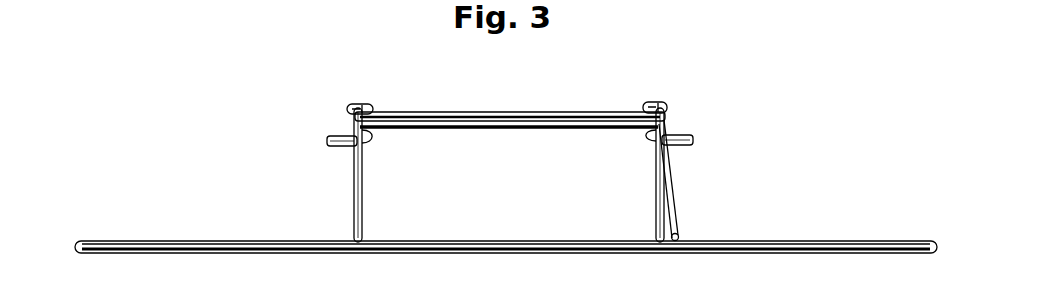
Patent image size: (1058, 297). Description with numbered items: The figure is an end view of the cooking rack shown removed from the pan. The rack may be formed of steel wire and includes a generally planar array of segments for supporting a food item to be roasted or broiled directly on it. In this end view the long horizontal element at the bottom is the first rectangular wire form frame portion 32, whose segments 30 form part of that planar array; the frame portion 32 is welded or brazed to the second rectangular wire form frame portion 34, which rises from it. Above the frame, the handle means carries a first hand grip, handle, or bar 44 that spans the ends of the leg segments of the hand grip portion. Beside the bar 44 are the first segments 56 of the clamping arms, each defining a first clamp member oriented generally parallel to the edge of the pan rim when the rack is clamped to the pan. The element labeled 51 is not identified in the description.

The segments 30 is at (762, 242).
The first rectangular wire form frame portion 32 is at (808, 241).
The second rectangular wire form frame portion 34 is at (355, 238).
The first hand grip 44 is at (474, 114).
The rod 51 is at (596, 133).
The first segment 56 is at (338, 138).